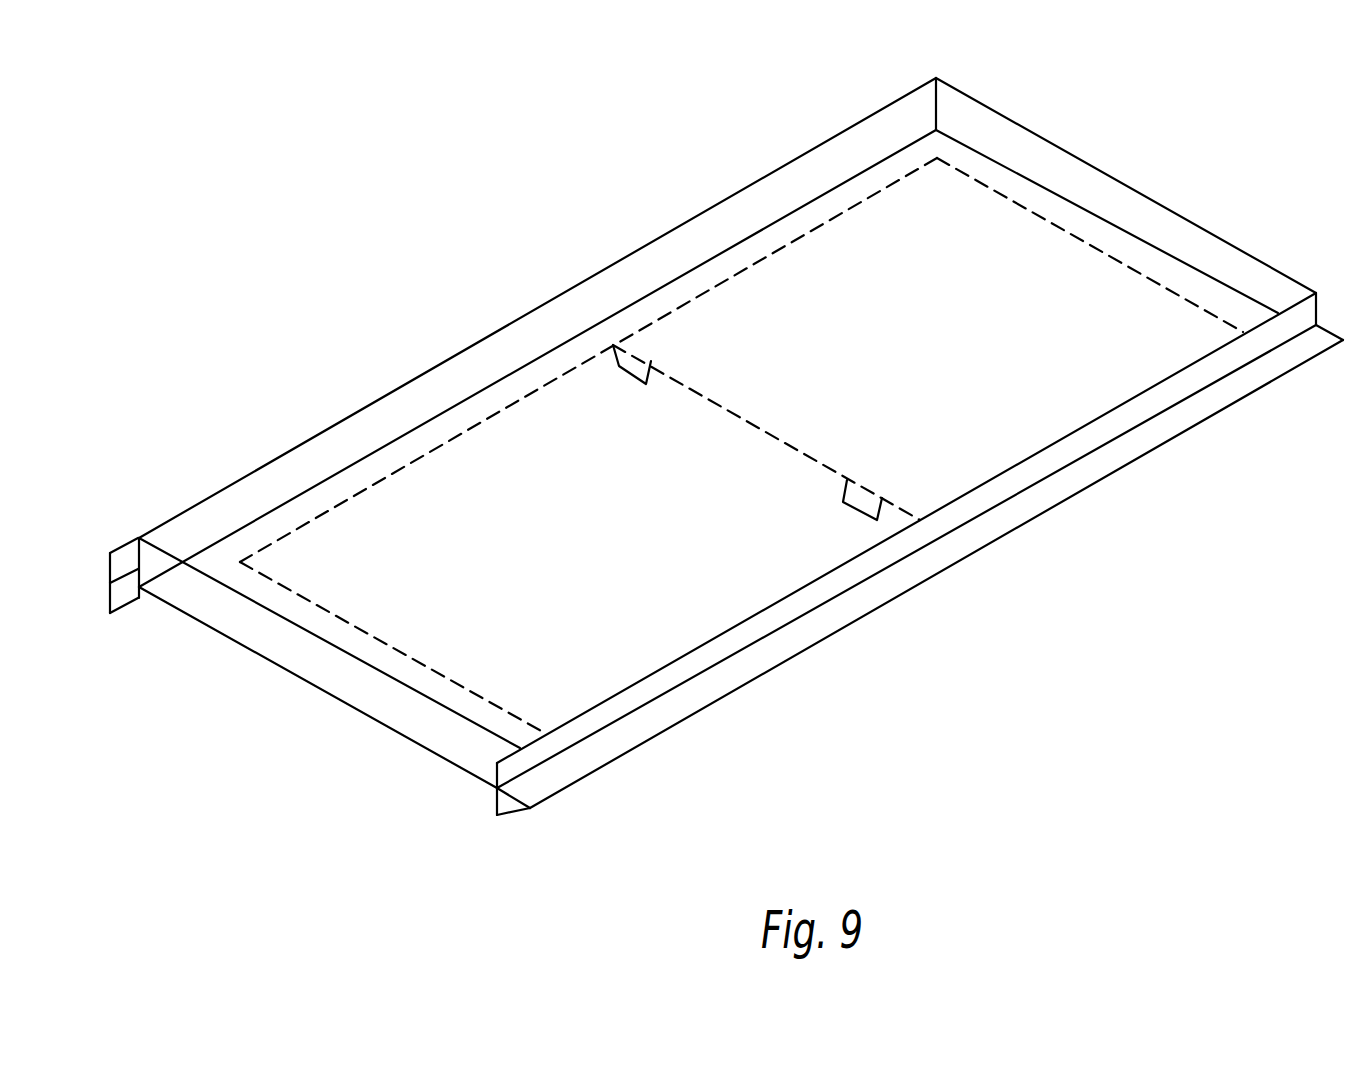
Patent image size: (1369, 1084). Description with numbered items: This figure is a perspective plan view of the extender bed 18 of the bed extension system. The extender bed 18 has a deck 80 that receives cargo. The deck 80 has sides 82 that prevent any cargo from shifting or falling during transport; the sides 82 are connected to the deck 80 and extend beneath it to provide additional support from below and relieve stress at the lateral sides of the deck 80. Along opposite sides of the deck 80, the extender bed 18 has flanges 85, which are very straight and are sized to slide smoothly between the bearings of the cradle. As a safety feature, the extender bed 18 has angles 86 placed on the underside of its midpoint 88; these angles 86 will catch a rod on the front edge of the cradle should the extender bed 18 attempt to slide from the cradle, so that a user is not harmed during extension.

The extender bed 18 is at (840, 282).
The deck 80 is at (703, 446).
The sides 82 is at (612, 266).
The flanges 85 is at (103, 570).
The angles 86 is at (618, 367).
The midpoint 88 is at (810, 457).